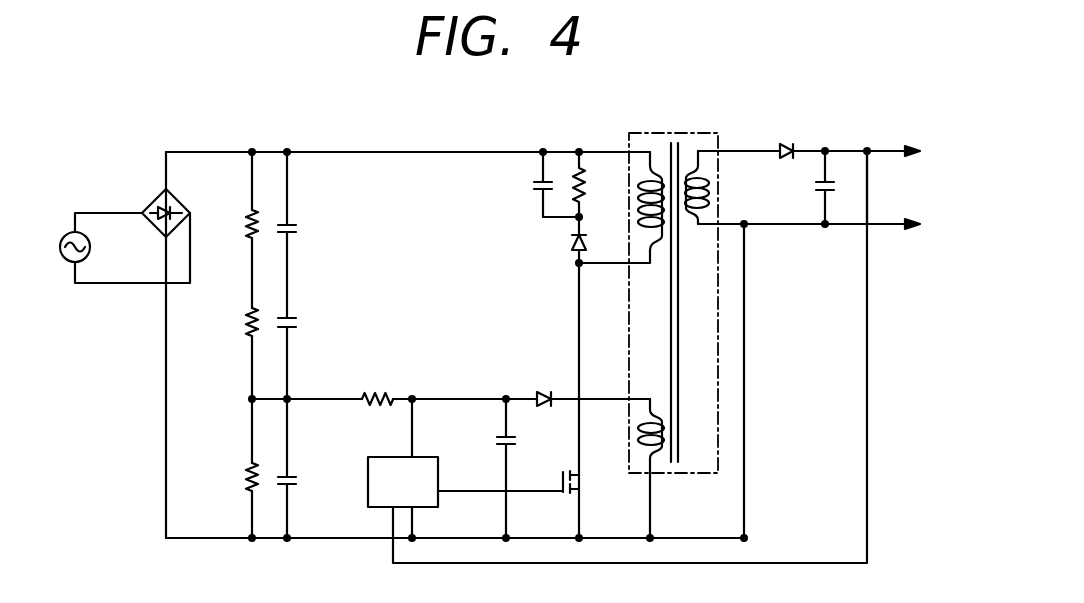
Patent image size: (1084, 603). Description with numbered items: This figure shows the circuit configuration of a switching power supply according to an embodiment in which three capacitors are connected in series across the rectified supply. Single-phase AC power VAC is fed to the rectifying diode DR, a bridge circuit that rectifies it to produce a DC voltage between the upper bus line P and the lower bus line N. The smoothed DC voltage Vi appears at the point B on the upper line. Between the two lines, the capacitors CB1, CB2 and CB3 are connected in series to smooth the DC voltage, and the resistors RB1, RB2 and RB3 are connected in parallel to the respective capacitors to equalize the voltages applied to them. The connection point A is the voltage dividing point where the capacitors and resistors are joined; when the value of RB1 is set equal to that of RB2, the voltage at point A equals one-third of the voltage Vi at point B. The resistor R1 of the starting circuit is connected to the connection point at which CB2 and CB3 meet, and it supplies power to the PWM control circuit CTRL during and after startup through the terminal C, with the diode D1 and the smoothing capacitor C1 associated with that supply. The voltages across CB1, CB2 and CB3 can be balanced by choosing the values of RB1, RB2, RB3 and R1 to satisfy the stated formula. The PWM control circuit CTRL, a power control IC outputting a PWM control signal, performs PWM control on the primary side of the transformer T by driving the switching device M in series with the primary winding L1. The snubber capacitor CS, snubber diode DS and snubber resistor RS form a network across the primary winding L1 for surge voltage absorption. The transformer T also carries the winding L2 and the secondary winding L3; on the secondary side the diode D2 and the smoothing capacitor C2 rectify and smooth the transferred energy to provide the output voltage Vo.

The positive DC bus line P is at (206, 152).
The point at which the smoothed DC voltage appears B is at (410, 152).
The negative bus line N is at (218, 538).
The connection point A is at (248, 397).
The terminal C is at (413, 398).
The rectifying diode DR is at (152, 199).
The AC power VAC is at (90, 247).
The voltage balancing resistor RB1 is at (249, 214).
The voltage balancing resistor RB2 is at (249, 311).
The voltage balancing resistor RB3 is at (249, 466).
The capacitor CB1 is at (290, 224).
The capacitor CB2 is at (290, 317).
The capacitor CB3 is at (290, 476).
The resistor of the starting circuit R1 is at (377, 393).
The diode D1 is at (536, 393).
The smoothing capacitor C1 is at (516, 440).
The PWM control circuit CTRL is at (465, 482).
The switching device M is at (566, 497).
The snubber capacitor CS is at (531, 186).
The snubber resistor RS is at (584, 188).
The snubber diode DS is at (571, 243).
The transformer T is at (690, 133).
The primary winding L1 is at (638, 212).
The auxiliary winding L2 is at (638, 427).
The secondary winding L3 is at (708, 183).
The diode D2 is at (781, 144).
The smoothing capacitor C2 is at (816, 198).
The output voltage Vo is at (898, 187).